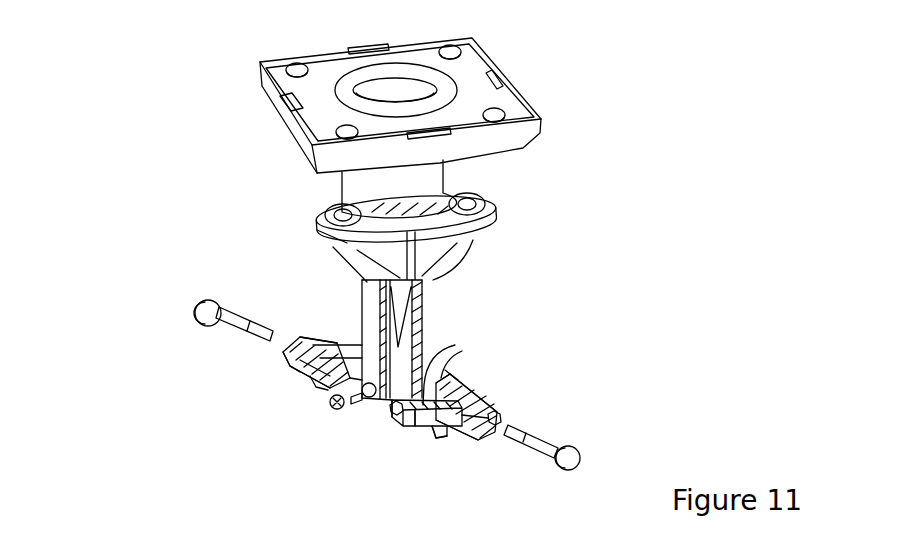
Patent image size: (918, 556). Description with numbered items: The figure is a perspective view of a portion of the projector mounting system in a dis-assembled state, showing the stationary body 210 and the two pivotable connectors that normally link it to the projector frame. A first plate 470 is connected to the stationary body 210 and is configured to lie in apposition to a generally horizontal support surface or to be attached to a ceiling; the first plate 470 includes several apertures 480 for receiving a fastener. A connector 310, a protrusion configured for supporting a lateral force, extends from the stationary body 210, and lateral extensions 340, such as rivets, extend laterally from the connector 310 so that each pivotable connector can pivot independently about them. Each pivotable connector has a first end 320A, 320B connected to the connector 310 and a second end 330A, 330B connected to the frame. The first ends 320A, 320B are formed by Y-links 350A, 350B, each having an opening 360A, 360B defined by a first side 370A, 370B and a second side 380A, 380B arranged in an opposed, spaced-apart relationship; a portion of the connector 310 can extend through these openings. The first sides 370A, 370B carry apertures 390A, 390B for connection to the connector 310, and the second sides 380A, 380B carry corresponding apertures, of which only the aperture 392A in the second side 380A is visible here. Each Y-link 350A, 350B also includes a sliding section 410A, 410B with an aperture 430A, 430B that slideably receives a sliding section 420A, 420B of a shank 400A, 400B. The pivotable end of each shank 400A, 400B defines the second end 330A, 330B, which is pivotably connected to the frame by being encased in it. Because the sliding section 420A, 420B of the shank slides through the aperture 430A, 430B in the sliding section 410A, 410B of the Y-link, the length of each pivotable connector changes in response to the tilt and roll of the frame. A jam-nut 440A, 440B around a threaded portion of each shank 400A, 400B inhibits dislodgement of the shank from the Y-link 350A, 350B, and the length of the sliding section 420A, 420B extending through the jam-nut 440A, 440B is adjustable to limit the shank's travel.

The stationary body 210 is at (589, 76).
The connector 310 is at (417, 315).
The lateral extensions 340 is at (347, 403).
The first plate 470 is at (513, 93).
The apertures 480 is at (297, 64).
The first end of first pivotable connector 320A is at (568, 342).
The first end of second pivotable connector 320B is at (260, 399).
The second end of first pivotable connector 330A is at (577, 472).
The second end of second pivotable connector 330B is at (192, 308).
The Y-link 350A is at (430, 432).
The Y-link 350B is at (323, 376).
The opening 360A is at (435, 384).
The opening 360B is at (342, 343).
The first side of Y-link 370A is at (407, 423).
The first side of Y-link 370B is at (313, 385).
The second side of Y-link 380A is at (467, 383).
The second side of Y-link 380B is at (345, 340).
The aperture 390A is at (395, 411).
The aperture 390B is at (318, 386).
The aperture 392A is at (456, 380).
The shank 400A is at (548, 432).
The shank 400B is at (232, 339).
The sliding section of Y-link 410A is at (470, 432).
The sliding section of Y-link 410B is at (318, 359).
The sliding section of shank 420A is at (523, 441).
The sliding section of shank 420B is at (248, 325).
The aperture 430A is at (500, 421).
The aperture 430B is at (328, 343).
The jam-nut 440A is at (430, 385).
The jam-nut 440B is at (322, 385).